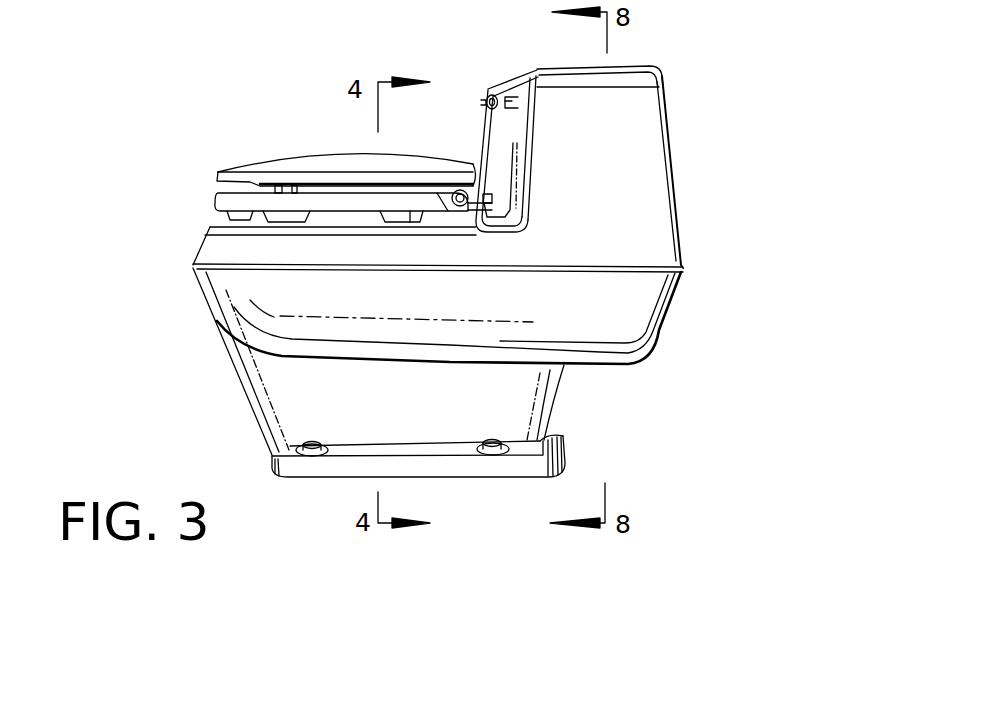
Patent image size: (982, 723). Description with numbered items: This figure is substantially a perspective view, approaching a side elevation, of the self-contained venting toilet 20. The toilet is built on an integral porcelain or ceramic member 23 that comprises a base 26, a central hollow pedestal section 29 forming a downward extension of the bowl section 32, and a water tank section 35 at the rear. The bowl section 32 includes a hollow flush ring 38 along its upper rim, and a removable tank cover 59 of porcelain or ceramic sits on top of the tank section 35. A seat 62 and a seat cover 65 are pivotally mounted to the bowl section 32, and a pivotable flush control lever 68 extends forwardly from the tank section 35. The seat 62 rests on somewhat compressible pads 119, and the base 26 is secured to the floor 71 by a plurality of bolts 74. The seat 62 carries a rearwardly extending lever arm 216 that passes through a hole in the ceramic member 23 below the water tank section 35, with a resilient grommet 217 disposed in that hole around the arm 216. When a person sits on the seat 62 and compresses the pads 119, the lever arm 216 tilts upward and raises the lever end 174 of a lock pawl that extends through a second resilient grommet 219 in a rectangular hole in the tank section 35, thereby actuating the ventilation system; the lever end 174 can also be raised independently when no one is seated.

The self-contained venting toilet 20 is at (692, 97).
The integral porcelain or ceramic member 23 is at (750, 273).
The base 26 is at (493, 473).
The central hollow pedestal section 29 is at (240, 383).
The bowl section 32 is at (222, 307).
The water tank section 35 is at (660, 177).
The hollow flush ring 38 is at (198, 247).
The removable tank cover 59 is at (558, 70).
The seat 62 is at (216, 198).
The seat cover 65 is at (292, 158).
The pivotable flush control lever 68 is at (481, 103).
The floor 71 is at (698, 445).
The bolts 74 is at (318, 441).
The compressible pads 119 is at (400, 218).
The lever end of lock pawl 174 is at (505, 97).
The lever arm 216 is at (470, 207).
The resilient grommet 217 is at (493, 196).
The resilient grommet 219 is at (518, 107).